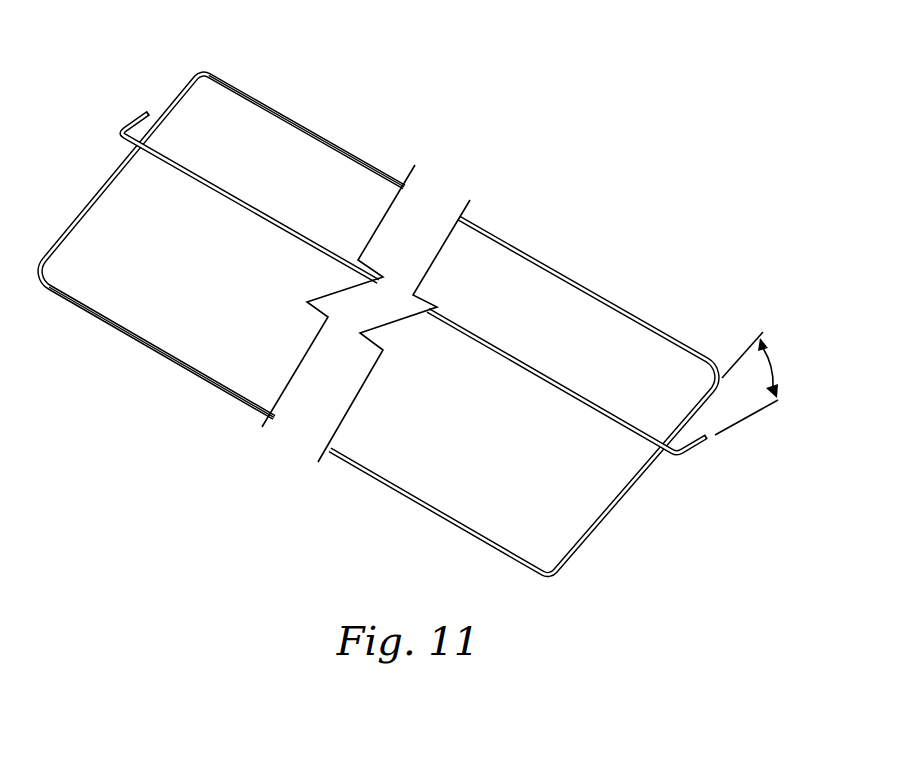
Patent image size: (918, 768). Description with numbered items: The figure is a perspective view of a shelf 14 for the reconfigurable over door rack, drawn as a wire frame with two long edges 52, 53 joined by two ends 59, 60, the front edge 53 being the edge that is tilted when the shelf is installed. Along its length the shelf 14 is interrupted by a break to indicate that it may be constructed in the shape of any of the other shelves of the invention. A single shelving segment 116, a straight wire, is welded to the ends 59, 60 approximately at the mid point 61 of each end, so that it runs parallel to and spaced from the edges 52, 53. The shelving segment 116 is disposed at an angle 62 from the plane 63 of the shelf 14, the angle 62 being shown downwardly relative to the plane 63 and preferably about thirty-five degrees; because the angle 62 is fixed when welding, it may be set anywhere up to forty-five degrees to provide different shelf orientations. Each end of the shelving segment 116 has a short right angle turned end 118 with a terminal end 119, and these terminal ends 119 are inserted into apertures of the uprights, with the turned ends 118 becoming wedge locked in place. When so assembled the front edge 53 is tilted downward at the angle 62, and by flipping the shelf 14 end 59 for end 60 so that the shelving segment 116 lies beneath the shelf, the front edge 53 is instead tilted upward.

The shelf 14 is at (182, 514).
The edge 52 is at (352, 153).
The front edge 53 is at (380, 481).
The end 59 is at (80, 212).
The end 60 is at (611, 510).
The mid point 61 is at (86, 97).
The angle 62 is at (773, 367).
The plane 63 is at (743, 352).
The shelving segment 116 is at (469, 340).
The right angle turned end 118 is at (692, 449).
The terminal end 119 is at (714, 438).